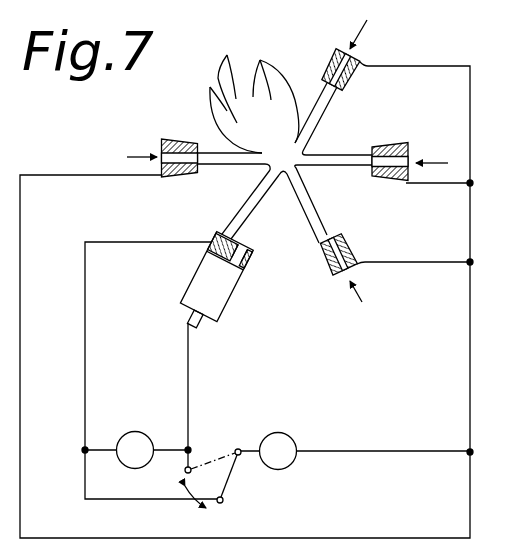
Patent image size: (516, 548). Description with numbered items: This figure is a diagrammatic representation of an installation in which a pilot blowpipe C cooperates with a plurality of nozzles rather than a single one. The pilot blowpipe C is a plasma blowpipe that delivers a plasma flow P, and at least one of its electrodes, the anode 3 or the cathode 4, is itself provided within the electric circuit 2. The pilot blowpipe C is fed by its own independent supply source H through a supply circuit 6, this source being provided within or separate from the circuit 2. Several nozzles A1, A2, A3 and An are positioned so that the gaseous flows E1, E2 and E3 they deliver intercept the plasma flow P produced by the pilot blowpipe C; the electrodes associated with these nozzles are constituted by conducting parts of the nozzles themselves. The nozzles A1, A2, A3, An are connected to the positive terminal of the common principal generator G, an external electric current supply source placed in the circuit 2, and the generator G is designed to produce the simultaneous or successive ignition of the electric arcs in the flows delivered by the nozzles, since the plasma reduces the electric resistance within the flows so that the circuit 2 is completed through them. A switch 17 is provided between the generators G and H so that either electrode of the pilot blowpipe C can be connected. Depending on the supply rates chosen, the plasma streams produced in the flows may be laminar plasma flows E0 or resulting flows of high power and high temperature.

The laminar plasma flow E0 is at (251, 97).
The nozzle An is at (169, 138).
The gaseous flow E3 is at (311, 109).
The nozzle A3 is at (353, 79).
The gaseous flow E2 is at (329, 162).
The nozzle A2 is at (398, 181).
The gaseous flow E1 is at (317, 215).
The nozzle A1 is at (330, 278).
The plasma flow P is at (262, 188).
The anode 3 is at (223, 238).
The cathode 4 is at (244, 257).
The pilot blowpipe C is at (222, 269).
The supply circuit 6 is at (85, 357).
The independent supply source H is at (137, 442).
The principal generator G is at (283, 441).
The switch 17 is at (223, 488).
The electric circuit 2 is at (470, 360).